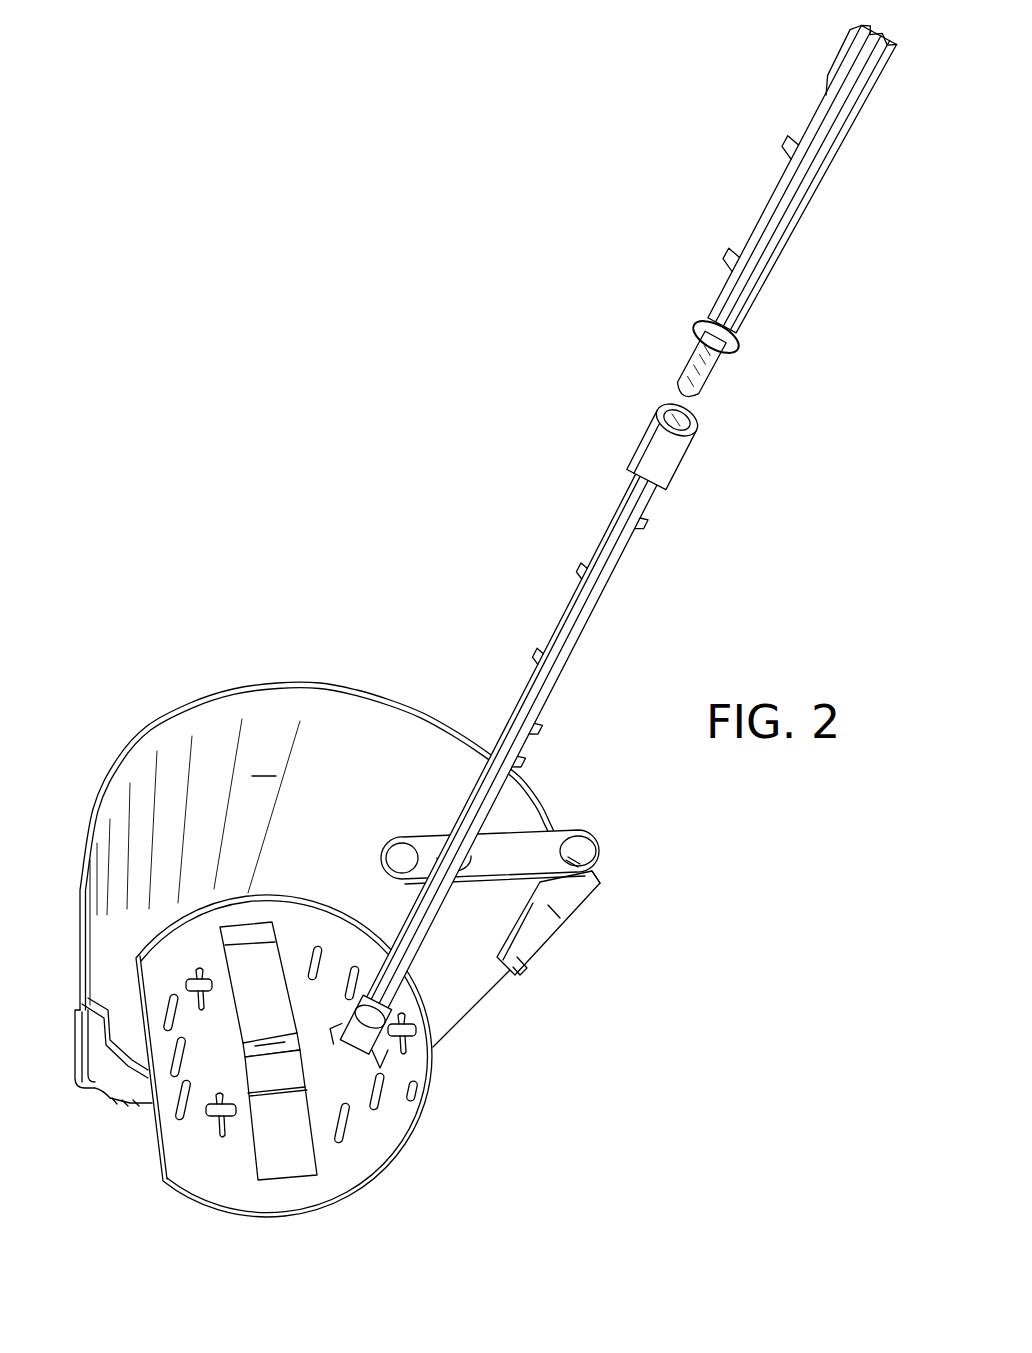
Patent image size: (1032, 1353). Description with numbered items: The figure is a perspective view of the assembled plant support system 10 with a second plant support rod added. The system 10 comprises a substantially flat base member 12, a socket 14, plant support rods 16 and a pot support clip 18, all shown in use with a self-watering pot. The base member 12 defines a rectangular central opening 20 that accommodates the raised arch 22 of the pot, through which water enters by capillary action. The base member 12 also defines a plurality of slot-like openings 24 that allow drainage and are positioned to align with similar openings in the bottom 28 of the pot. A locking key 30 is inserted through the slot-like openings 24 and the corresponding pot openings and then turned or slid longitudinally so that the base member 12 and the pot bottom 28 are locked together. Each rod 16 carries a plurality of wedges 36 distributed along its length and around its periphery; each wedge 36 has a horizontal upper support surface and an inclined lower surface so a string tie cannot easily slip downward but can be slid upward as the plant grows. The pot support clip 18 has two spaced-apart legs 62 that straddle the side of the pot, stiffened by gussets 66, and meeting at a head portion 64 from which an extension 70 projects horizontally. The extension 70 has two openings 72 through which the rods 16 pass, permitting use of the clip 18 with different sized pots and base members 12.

The plant support system 10 is at (372, 655).
The base member 12 is at (348, 1089).
The socket 14 is at (395, 1050).
The plant support rod 16 is at (802, 222).
The pot support clip 18 is at (601, 885).
The central opening 20 is at (296, 1157).
The raised arch 22 is at (277, 965).
The slot-like openings 24 is at (348, 1128).
The bottom of the pot 28 is at (134, 1048).
The locking key 30 is at (203, 979).
The wedges 36 is at (650, 525).
The legs 62 is at (522, 972).
The head portion 64 is at (602, 853).
The gussets 66 is at (548, 925).
The extension 70 is at (525, 850).
The openings 72 is at (434, 840).